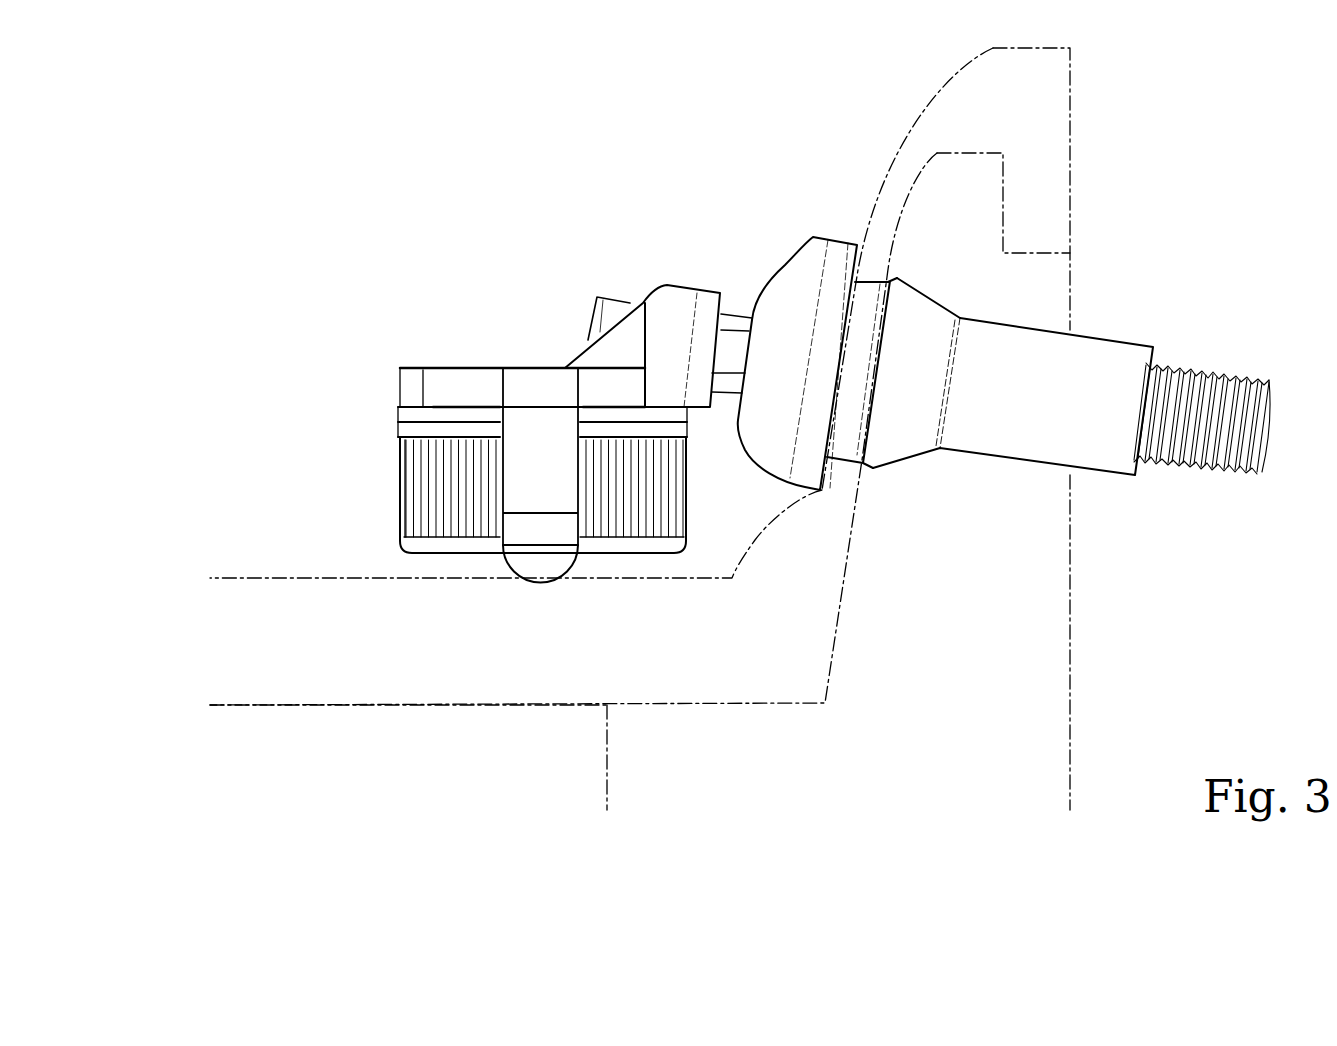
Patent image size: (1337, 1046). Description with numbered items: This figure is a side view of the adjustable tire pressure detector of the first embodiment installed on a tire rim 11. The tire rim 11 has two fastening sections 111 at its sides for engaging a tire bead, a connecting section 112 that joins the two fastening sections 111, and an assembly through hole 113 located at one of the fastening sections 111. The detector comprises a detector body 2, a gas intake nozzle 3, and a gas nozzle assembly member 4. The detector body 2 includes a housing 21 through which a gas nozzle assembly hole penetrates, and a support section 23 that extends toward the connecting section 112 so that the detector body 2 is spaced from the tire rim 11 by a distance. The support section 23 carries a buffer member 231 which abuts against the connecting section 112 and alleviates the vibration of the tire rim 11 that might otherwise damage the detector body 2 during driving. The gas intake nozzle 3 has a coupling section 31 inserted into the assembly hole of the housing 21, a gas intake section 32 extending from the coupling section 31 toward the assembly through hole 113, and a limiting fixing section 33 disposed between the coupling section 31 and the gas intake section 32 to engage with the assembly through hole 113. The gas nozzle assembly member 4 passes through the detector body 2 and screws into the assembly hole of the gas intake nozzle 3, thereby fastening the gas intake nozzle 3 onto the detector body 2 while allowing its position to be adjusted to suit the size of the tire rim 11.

The detector body 2 is at (392, 478).
The housing 21 is at (400, 425).
The support section 23 is at (513, 492).
The buffer member 231 is at (540, 577).
The gas intake nozzle 3 is at (1148, 334).
The coupling section 31 is at (738, 310).
The gas intake section 32 is at (1093, 343).
The limiting fixing section 33 is at (866, 280).
The gas nozzle assembly member 4 is at (603, 313).
The tire rim 11 is at (1076, 614).
The fastening section 111 is at (815, 573).
The connecting section 112 is at (403, 688).
The assembly through hole 113 is at (840, 462).